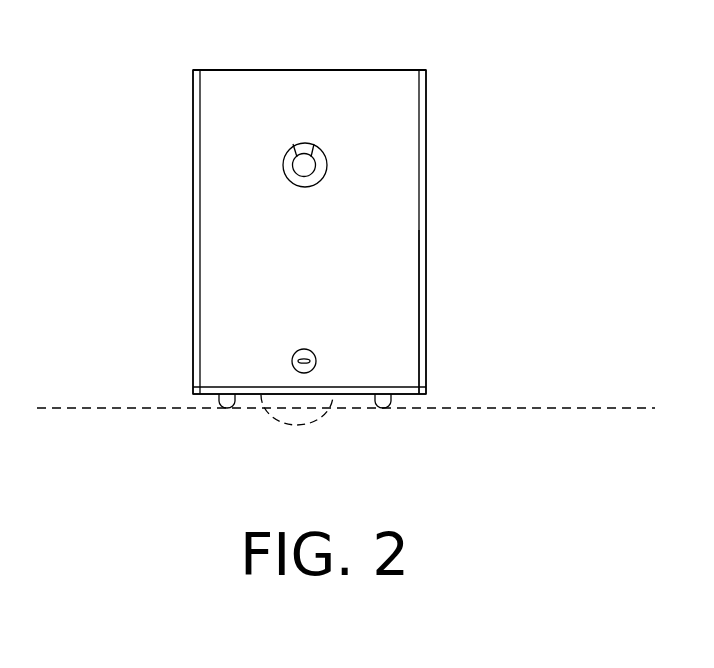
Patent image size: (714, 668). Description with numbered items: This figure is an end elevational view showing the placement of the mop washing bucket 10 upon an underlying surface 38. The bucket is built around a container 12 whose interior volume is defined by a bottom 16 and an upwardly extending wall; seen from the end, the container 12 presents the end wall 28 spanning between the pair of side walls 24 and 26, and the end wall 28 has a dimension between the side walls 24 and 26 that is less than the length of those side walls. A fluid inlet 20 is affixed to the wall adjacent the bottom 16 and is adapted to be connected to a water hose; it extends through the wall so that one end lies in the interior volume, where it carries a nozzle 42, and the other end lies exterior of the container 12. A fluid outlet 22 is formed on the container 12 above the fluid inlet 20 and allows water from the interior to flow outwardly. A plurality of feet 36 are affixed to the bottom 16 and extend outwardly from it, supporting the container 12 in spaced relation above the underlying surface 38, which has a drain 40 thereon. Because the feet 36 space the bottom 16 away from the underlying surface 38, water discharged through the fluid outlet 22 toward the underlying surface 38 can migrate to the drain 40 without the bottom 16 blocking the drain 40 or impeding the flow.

The mop washing bucket 10 is at (480, 208).
The container 12 is at (428, 312).
The bottom 16 is at (374, 394).
The fluid inlet 20 is at (307, 349).
The fluid outlet 22 is at (316, 148).
The side wall 24 is at (193, 222).
The side wall 26 is at (427, 160).
The end wall 28 is at (388, 80).
The feet 36 is at (227, 410).
The underlying surface 38 is at (512, 408).
The drain 40 is at (327, 417).
The nozzle 42 is at (317, 361).